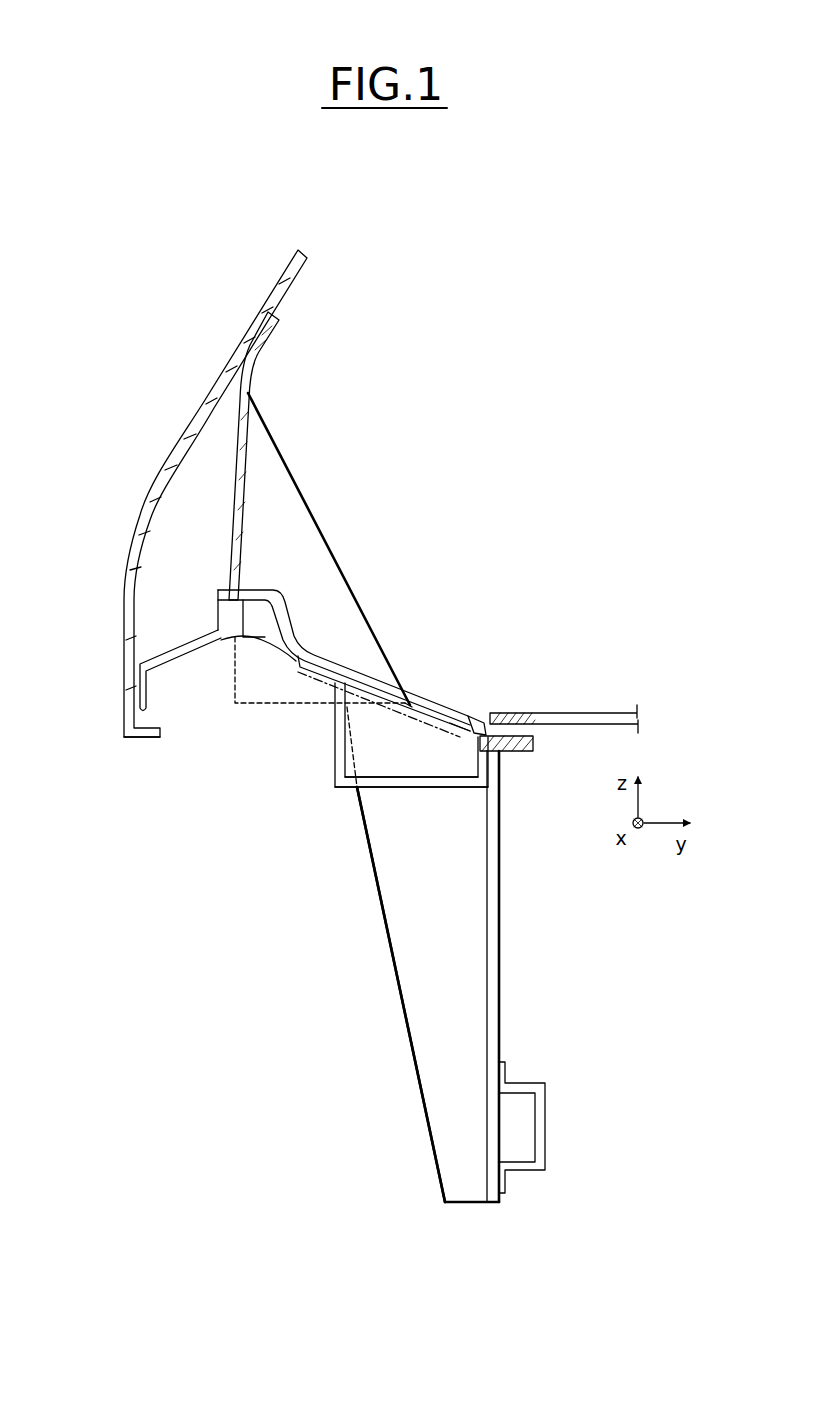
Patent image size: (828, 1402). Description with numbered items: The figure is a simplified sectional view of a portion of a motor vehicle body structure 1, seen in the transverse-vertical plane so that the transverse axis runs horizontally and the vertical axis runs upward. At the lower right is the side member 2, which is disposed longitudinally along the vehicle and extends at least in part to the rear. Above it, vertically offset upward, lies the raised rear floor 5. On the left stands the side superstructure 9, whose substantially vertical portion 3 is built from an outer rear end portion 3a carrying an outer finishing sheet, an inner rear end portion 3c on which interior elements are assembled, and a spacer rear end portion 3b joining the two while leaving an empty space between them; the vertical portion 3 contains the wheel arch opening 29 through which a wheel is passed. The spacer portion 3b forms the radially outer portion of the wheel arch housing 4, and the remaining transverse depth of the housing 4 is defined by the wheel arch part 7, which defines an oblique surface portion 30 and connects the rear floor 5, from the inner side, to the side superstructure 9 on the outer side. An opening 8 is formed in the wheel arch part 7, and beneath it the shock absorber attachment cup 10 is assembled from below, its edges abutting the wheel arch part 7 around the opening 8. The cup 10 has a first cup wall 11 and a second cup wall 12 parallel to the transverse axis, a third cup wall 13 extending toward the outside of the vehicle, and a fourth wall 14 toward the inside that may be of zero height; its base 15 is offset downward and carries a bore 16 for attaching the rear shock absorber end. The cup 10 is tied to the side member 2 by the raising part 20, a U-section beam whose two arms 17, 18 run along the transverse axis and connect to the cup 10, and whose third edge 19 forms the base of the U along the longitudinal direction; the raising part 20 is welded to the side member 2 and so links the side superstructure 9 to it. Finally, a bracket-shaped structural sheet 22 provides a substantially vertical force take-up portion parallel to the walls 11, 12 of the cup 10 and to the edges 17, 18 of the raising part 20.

The body structure 1 is at (238, 282).
The side member 2 is at (545, 1126).
The substantially vertical portion 3 is at (227, 790).
The outer rear end portion 3a is at (183, 439).
The spacer rear end portion 3b is at (180, 650).
The inner rear end portion 3c is at (228, 523).
The wheel arch housing 4 is at (210, 716).
The rear floor 5 is at (576, 713).
The wheel arch part 7 is at (287, 617).
The opening 8 is at (372, 672).
The side superstructure 9 is at (125, 852).
The shock absorber attachment cup 10 is at (414, 722).
The first cup wall 11 is at (370, 712).
The second cup wall 12 is at (466, 752).
The third cup wall 13 is at (335, 748).
The fourth wall 14 is at (500, 777).
The base 15 is at (373, 777).
The bore 16 is at (420, 788).
The first parallel edge 17 is at (410, 1045).
The second parallel edge 18 is at (410, 1045).
The third edge 19 is at (500, 975).
The raising part 20 is at (463, 906).
The structural sheet 22 is at (305, 510).
The wheel arch opening 29 is at (112, 781).
The oblique surface portion 30 is at (331, 657).